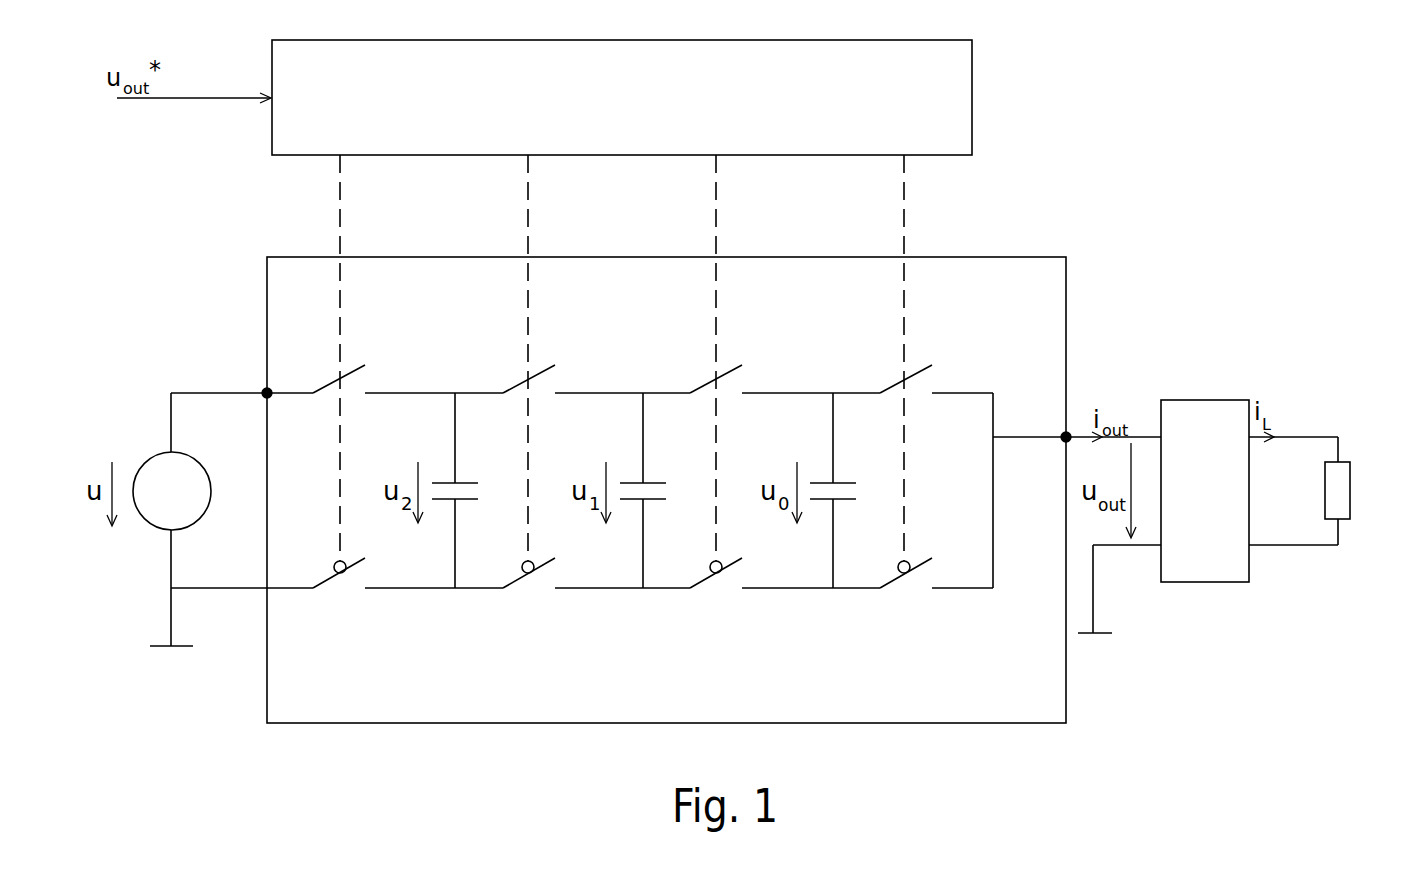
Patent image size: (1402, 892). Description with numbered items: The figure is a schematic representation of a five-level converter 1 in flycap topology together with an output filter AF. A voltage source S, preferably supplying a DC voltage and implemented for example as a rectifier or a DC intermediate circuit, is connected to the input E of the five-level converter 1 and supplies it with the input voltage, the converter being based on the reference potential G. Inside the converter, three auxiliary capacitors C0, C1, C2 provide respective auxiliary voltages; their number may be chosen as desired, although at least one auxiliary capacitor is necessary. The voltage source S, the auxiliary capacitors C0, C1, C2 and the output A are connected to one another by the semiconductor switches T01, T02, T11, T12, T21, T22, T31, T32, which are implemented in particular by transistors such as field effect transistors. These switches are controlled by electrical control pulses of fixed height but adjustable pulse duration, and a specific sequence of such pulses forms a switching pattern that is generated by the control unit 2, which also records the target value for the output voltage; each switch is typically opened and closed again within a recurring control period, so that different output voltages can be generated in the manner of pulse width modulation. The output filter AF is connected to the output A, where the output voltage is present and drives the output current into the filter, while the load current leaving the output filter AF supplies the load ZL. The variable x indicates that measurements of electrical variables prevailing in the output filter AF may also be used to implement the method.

The 5-level converter 1 is at (987, 257).
The control unit 2 is at (631, 108).
The voltage source S is at (165, 487).
The input E is at (261, 391).
The output A is at (1068, 433).
The reference potential G is at (167, 660).
The output filter AF is at (1205, 491).
The load ZL is at (1355, 490).
The variable x is at (1140, 443).
The auxiliary capacitor C0 is at (852, 490).
The auxiliary capacitor C1 is at (662, 490).
The auxiliary capacitor C2 is at (474, 490).
The semiconductor switch T01 is at (936, 372).
The semiconductor switch T02 is at (936, 561).
The semiconductor switch T11 is at (785, 372).
The semiconductor switch T12 is at (785, 561).
The semiconductor switch T21 is at (596, 372).
The semiconductor switch T22 is at (596, 561).
The semiconductor switch T31 is at (408, 372).
The semiconductor switch T32 is at (408, 561).